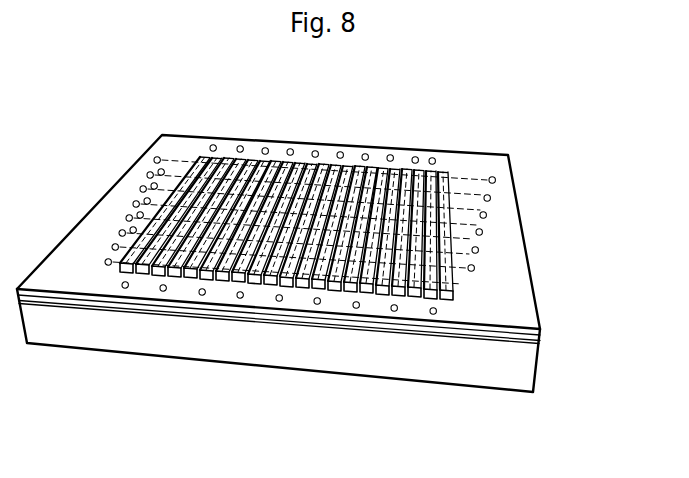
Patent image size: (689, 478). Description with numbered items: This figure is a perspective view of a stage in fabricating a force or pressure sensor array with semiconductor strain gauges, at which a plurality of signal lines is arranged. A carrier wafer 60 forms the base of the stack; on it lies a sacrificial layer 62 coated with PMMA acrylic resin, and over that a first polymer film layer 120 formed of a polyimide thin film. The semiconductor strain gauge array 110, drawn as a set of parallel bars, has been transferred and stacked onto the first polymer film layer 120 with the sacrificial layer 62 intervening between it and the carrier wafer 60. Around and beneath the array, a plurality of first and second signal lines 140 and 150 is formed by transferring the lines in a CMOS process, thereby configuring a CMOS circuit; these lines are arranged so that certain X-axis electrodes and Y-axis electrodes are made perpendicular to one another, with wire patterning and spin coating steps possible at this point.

The carrier wafer 60 is at (423, 368).
The sacrificial layer 62 is at (515, 348).
The semiconductor strain gauge array 110 is at (450, 225).
The first polymer film layer 120 is at (503, 332).
The first signal lines 140 is at (112, 276).
The second signal lines 150 is at (172, 160).